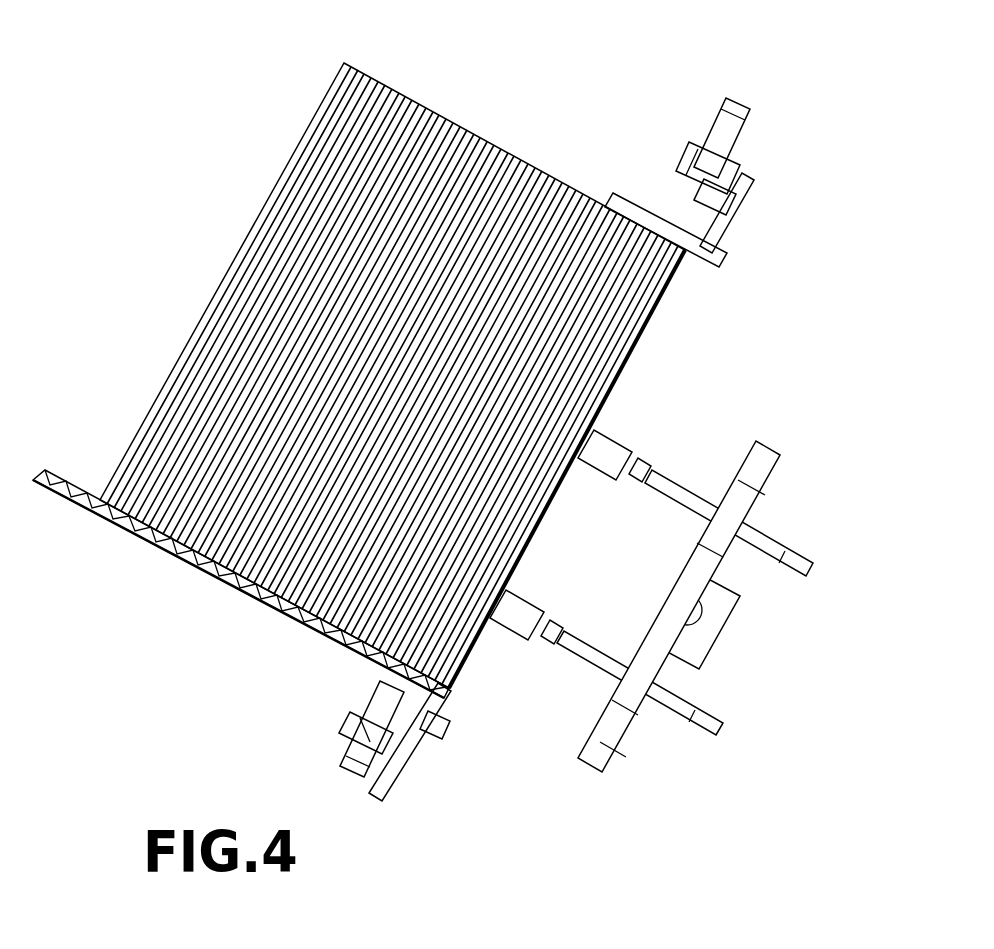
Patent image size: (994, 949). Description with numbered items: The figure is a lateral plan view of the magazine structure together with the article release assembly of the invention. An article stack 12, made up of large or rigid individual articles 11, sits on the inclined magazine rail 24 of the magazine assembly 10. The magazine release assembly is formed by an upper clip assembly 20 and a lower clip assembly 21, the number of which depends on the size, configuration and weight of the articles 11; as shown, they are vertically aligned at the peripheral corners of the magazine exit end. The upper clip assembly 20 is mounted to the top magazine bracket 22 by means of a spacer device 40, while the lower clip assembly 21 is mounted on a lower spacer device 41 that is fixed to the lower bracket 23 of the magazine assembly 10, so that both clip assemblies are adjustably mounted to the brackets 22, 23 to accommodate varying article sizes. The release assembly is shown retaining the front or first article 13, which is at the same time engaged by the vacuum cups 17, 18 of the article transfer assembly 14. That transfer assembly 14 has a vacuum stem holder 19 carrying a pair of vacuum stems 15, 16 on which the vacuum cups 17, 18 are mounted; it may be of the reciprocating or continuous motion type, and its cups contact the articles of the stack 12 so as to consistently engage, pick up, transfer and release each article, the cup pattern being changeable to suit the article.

The magazine assembly 10 is at (568, 129).
The individual articles 11 is at (258, 218).
The article stack 12 is at (96, 404).
The front article 13 is at (672, 341).
The article transfer assembly 14 is at (811, 471).
The vacuum stem 15 is at (678, 497).
The vacuum stem 16 is at (587, 653).
The vacuum cup 17 is at (597, 425).
The vacuum cup 18 is at (503, 585).
The vacuum stem holder 19 is at (723, 543).
The upper clip assembly 20 is at (760, 210).
The lower clip assembly 21 is at (435, 766).
The top magazine bracket 22 is at (720, 136).
The lower bracket 23 is at (355, 757).
The inclined magazine rail 24 is at (252, 606).
The spacer device 40 is at (733, 160).
The lower spacer device 41 is at (405, 718).